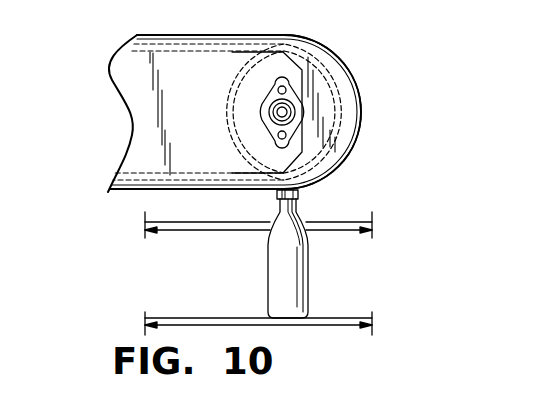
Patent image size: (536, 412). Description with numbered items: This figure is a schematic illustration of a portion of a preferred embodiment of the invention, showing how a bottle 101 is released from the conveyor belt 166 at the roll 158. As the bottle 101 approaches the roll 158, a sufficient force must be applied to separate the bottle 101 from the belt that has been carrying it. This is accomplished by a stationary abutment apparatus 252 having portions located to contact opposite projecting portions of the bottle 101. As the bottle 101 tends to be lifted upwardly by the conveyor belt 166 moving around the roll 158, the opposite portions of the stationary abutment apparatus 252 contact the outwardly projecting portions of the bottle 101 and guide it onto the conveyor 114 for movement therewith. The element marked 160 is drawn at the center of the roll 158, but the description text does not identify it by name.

The conveyor belt 166 is at (136, 200).
The bearing 160 is at (297, 107).
The roll 158 is at (328, 135).
The stationary abutment apparatus 252 is at (327, 224).
The conveyor 114 is at (322, 320).
The bottle 101 is at (278, 305).